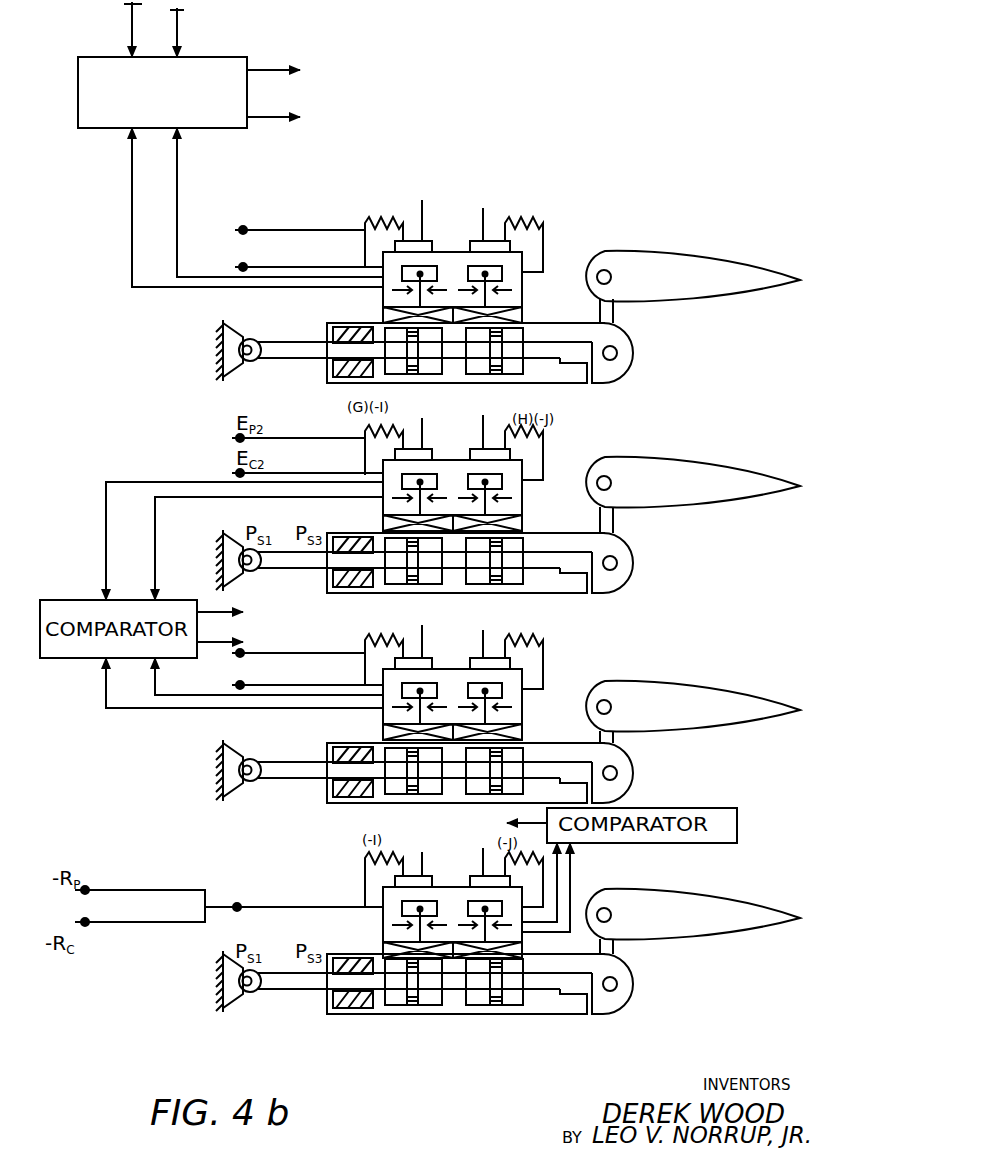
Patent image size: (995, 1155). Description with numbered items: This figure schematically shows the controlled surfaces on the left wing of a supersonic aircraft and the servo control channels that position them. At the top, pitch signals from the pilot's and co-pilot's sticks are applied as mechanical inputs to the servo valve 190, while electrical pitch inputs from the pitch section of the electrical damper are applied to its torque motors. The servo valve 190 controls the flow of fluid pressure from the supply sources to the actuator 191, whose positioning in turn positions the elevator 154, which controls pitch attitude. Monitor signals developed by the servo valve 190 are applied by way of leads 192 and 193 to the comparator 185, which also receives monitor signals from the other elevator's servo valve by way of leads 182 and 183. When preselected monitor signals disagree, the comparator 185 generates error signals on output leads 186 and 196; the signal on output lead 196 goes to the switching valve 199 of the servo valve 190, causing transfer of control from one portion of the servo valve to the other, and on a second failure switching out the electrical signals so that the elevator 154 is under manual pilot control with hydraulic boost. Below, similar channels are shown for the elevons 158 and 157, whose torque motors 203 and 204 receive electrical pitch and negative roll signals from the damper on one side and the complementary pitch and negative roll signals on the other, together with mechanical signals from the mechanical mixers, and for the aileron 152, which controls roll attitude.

The lead 182 is at (132, 33).
The lead 183 is at (177, 38).
The comparator 185 is at (215, 130).
The output lead 186 is at (265, 70).
The output lead 196 is at (265, 117).
The servo valve 190 is at (424, 255).
The actuator 191 is at (444, 384).
The lead 192 is at (132, 195).
The lead 193 is at (177, 207).
The switching valve 199 is at (383, 312).
The torque motor 203 is at (490, 421).
The torque motor 204 is at (454, 630).
The elevator 154 is at (690, 258).
The elevon 158 is at (683, 470).
The elevon 157 is at (684, 692).
The aileron 152 is at (678, 903).